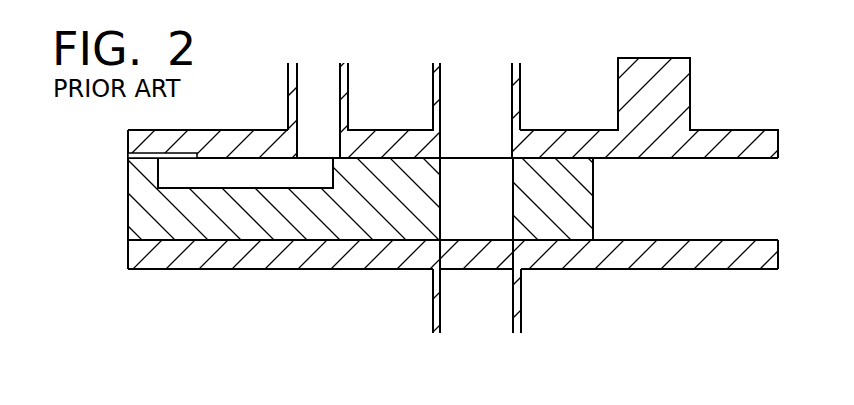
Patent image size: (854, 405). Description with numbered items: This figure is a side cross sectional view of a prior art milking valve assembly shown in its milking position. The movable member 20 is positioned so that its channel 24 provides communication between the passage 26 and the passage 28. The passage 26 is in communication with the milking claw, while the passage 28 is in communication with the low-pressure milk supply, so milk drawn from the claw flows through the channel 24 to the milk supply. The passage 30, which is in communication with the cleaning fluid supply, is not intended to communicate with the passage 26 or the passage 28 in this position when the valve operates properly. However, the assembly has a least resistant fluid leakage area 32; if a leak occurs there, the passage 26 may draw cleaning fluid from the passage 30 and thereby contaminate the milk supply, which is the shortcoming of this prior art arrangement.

The member 20 is at (143, 213).
The channel 24 is at (513, 195).
The passage 26 is at (442, 85).
The passage 28 is at (443, 303).
The passage 30 is at (297, 87).
The least resistant fluid leakage area 32 is at (392, 158).